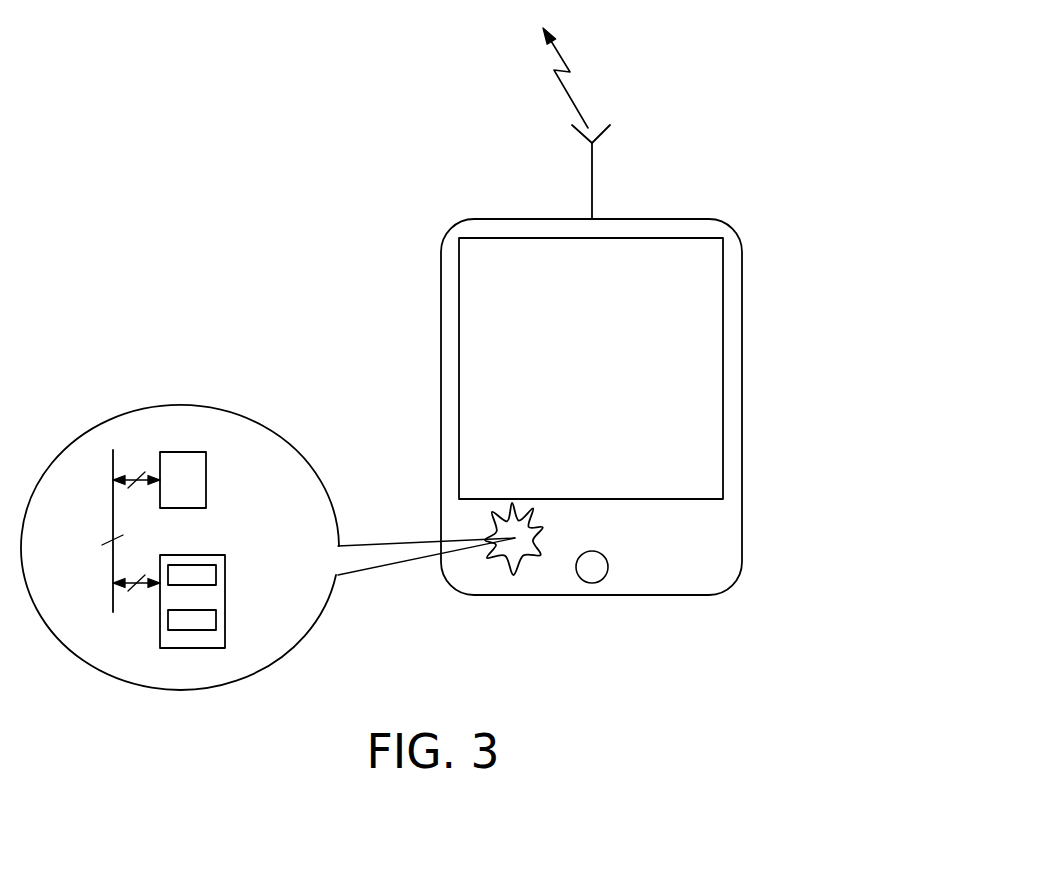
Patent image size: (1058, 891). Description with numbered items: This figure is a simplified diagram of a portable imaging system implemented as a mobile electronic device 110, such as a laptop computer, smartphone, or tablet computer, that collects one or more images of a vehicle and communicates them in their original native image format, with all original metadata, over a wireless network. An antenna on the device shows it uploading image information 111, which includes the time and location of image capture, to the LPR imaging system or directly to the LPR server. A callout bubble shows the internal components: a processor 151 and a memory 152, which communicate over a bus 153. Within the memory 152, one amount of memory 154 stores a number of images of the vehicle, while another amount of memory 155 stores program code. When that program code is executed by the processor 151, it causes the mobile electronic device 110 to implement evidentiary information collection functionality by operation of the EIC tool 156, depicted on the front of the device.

The mobile electronic device 110 is at (733, 231).
The image information 111 is at (560, 53).
The processor 151 is at (207, 478).
The memory 152 is at (160, 632).
The bus 153 is at (113, 508).
The amount of memory 154 is at (216, 573).
The amount of memory 155 is at (216, 620).
The EIC tool 156 is at (545, 537).